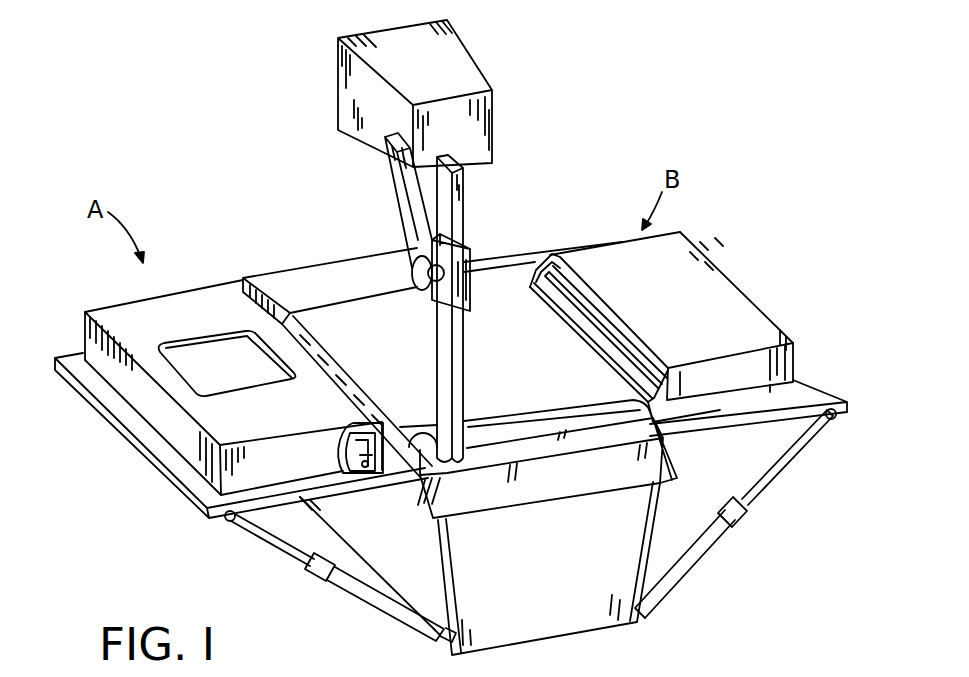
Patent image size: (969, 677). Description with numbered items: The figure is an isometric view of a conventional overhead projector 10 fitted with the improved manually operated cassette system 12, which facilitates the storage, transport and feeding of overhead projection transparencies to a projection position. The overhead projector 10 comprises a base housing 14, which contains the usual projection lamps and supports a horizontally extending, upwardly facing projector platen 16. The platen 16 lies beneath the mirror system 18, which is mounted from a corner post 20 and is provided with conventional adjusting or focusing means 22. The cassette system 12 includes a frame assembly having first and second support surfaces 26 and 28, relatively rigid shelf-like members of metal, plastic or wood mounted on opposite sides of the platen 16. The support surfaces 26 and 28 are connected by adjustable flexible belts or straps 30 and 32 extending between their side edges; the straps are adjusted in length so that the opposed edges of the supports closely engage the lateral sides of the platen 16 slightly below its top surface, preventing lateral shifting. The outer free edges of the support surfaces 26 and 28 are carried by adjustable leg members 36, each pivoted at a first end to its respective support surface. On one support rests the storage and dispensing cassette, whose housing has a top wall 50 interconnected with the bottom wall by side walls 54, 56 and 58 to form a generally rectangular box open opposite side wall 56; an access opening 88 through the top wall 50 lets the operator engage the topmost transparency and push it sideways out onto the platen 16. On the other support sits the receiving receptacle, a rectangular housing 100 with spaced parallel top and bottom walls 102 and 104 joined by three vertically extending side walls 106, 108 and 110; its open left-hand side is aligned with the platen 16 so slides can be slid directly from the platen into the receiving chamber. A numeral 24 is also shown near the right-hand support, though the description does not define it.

The overhead projector 10 is at (530, 83).
The manually operated cassette system 12 is at (715, 219).
The base housing 14 is at (580, 623).
The projector platen 16 is at (388, 305).
The mirror system 18 is at (340, 75).
The corner post 20 is at (457, 333).
The adjusting or focusing means 22 is at (470, 290).
The table right portion 24 is at (823, 371).
The first support surface 26 is at (173, 465).
The second support surface 28 is at (777, 413).
The flexible belt or strap 30 is at (537, 417).
The flexible belt or strap 32 is at (330, 290).
The adjustable support or leg member 36 is at (393, 627).
The top wall 50 is at (170, 310).
The side wall 54 is at (240, 478).
The side wall 56 is at (150, 408).
The side wall 58 is at (82, 342).
The access opening 88 is at (250, 386).
The rectangular housing 100 is at (727, 268).
The top wall 102 is at (638, 254).
The bottom wall 104 is at (630, 363).
The side wall 106 is at (758, 368).
The side wall 108 is at (767, 320).
The side wall 110 is at (540, 262).